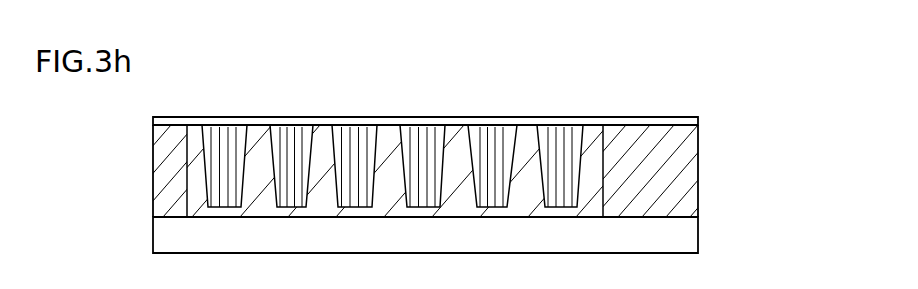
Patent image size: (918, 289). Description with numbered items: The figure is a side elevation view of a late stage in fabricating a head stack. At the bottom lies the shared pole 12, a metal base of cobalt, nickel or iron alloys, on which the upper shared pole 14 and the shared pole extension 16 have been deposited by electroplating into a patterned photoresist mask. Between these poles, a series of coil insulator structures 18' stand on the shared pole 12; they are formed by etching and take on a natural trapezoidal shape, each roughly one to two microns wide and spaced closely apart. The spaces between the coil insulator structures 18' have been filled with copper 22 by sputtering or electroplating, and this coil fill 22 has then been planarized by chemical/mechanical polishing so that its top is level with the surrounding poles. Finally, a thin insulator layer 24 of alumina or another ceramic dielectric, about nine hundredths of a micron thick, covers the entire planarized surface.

The shared pole 12 is at (682, 238).
The upper shared pole 14 is at (682, 170).
The shared pole extension 16 is at (163, 172).
The coil insulator structure 18' is at (400, 144).
The copper fill 22 is at (488, 137).
The insulator layer 24 is at (632, 125).